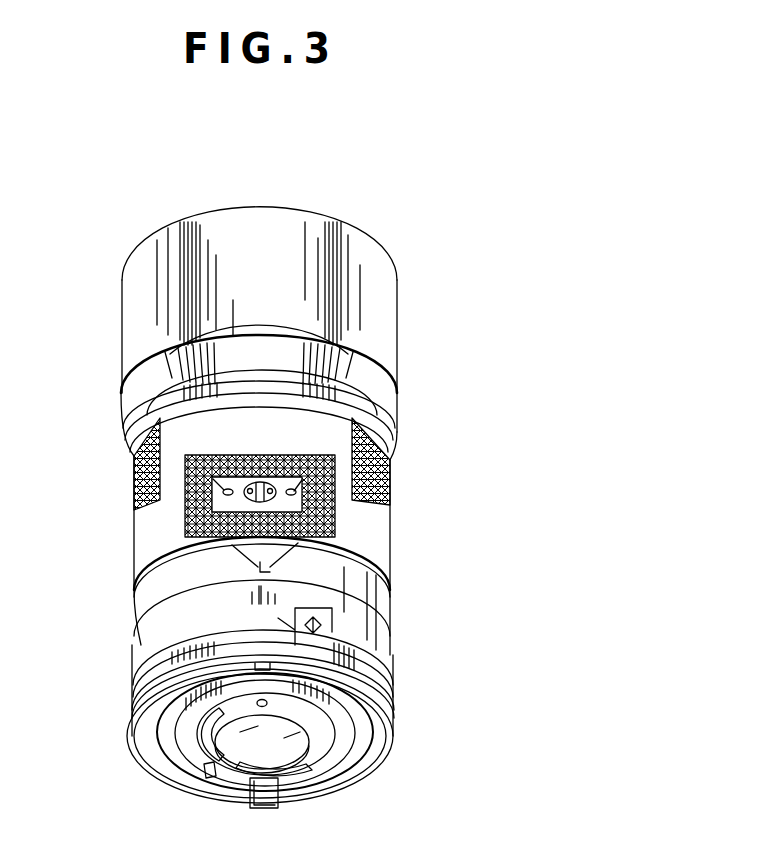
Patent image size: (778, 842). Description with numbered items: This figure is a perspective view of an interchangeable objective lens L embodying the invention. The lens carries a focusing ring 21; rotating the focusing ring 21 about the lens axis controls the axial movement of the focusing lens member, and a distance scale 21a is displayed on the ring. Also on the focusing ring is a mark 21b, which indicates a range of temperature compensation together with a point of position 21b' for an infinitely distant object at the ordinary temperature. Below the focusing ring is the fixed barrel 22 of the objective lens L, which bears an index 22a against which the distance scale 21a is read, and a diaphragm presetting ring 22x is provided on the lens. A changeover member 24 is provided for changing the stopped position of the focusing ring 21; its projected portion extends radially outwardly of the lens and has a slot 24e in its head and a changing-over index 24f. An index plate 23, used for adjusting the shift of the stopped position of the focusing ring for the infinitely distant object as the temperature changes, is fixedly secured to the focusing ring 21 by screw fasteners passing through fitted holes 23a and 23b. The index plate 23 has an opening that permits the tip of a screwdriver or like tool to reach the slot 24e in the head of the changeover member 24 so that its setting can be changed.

The objective lens L is at (405, 481).
The focusing ring 21 is at (152, 518).
The distance scale 21a is at (142, 587).
The mark 21b is at (344, 576).
The point of position for an infinitely distant object 21b' is at (168, 577).
The fixed barrel 22 is at (140, 641).
The index 22a is at (140, 637).
The diaphragm presetting ring 22x is at (380, 660).
The index plate 23 is at (185, 491).
The fitted hole 23a is at (186, 478).
The fitted hole 23b is at (336, 500).
The changeover member 24 is at (281, 478).
The slot 24e is at (261, 478).
The changing-over index 24f is at (232, 478).